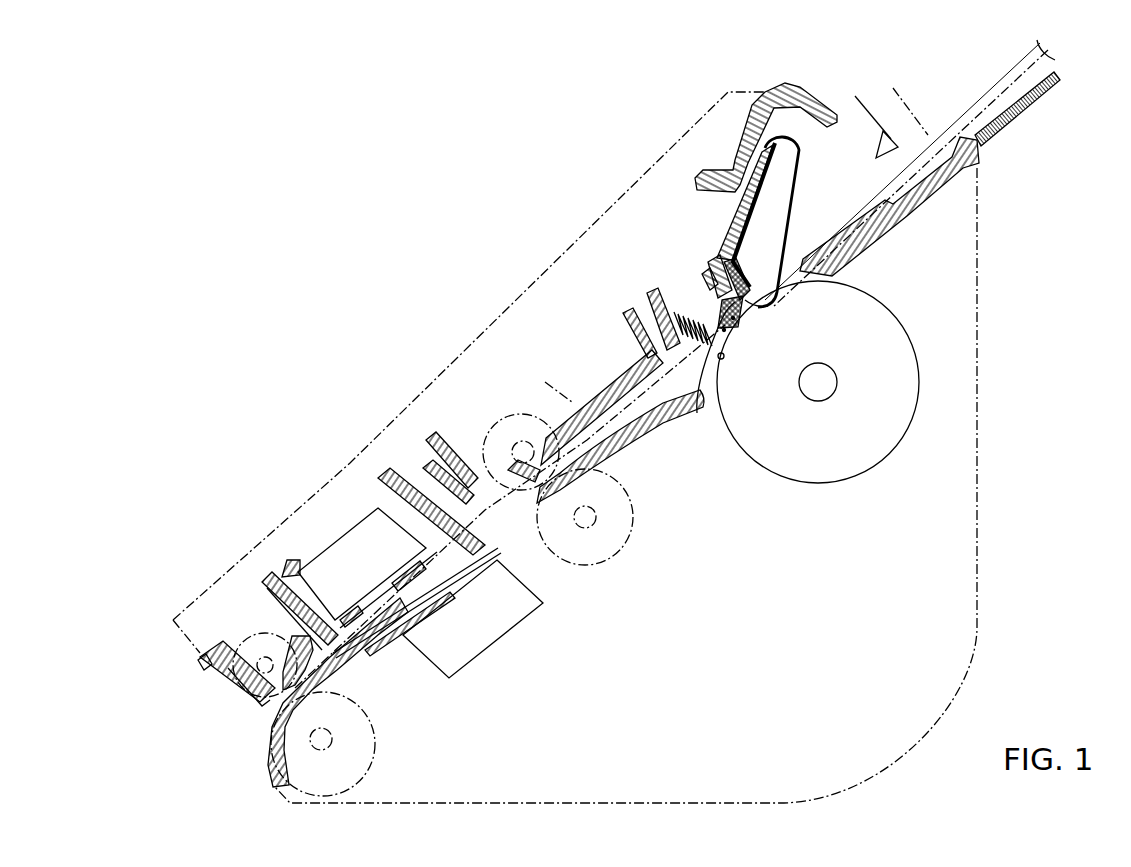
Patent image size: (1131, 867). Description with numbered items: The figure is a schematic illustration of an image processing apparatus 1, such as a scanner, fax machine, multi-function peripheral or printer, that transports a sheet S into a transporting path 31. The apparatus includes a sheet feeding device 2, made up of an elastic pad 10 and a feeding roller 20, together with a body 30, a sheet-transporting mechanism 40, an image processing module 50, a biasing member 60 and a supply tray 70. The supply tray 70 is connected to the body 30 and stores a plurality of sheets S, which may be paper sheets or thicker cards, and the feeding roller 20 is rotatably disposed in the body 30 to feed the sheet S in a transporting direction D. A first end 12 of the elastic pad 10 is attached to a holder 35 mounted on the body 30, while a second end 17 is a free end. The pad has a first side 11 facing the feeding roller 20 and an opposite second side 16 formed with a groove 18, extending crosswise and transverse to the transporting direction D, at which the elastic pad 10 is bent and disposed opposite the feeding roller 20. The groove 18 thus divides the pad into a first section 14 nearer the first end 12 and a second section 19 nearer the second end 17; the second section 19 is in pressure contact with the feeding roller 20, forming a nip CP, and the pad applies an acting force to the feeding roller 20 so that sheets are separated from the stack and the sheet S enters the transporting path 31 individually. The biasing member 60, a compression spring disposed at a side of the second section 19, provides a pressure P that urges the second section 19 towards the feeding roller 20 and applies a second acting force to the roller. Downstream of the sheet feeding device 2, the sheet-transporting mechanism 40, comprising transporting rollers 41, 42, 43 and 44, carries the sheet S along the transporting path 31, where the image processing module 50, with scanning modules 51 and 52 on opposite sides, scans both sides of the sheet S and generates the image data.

The image processing apparatus 1 is at (409, 140).
The sheet feeding device 2 is at (163, 177).
The elastic pad 10 is at (742, 260).
The first side 11 is at (770, 297).
The first end 12 is at (712, 258).
The first section 14 is at (713, 270).
The second side 16 is at (727, 302).
The second end 17 is at (697, 413).
The groove 18 is at (768, 306).
The second section 19 is at (722, 358).
The feeding roller 20 is at (917, 356).
The body 30 is at (706, 172).
The transporting path 31 is at (597, 402).
The holder 35 is at (725, 292).
The sheet-transporting mechanism 40 is at (172, 243).
The transporting roller 41 is at (618, 558).
The transporting roller 42 is at (495, 422).
The transporting roller 43 is at (372, 747).
The transporting roller 44 is at (250, 628).
The image processing module 50 is at (163, 378).
The scanning module 51 is at (497, 635).
The scanning module 52 is at (347, 530).
The biasing member 60 is at (675, 337).
The supply tray 70 is at (1023, 113).
The pressure P is at (650, 292).
The sheet S is at (611, 373).
The transporting direction D is at (870, 113).
The nip CP is at (725, 331).